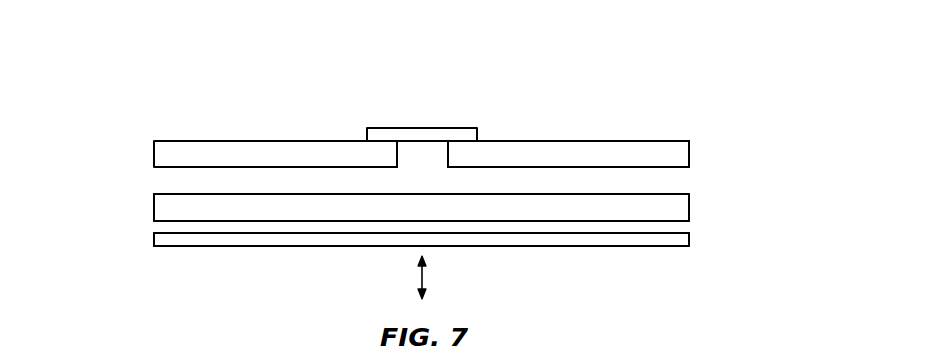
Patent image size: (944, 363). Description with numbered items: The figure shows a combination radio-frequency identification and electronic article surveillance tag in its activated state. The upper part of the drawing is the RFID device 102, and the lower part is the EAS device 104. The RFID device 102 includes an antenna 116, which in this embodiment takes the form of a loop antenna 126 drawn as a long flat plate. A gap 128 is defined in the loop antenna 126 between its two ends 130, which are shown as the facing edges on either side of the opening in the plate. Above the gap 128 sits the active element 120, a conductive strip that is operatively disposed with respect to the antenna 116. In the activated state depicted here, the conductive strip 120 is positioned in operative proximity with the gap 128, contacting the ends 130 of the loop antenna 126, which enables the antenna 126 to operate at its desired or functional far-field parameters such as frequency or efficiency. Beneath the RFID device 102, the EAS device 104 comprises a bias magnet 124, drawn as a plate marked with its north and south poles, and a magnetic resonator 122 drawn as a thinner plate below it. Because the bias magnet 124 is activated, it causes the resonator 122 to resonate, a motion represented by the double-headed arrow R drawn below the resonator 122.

The RFID device 102 is at (150, 151).
The EAS device 104 is at (150, 223).
The antenna 116 is at (691, 155).
The active element 120 is at (422, 132).
The magnetic resonator 122 is at (690, 242).
The bias magnet 124 is at (690, 207).
The loop antenna 126 is at (578, 155).
The gap 128 is at (413, 155).
The ends 130 is at (387, 153).
The arrow R is at (428, 277).